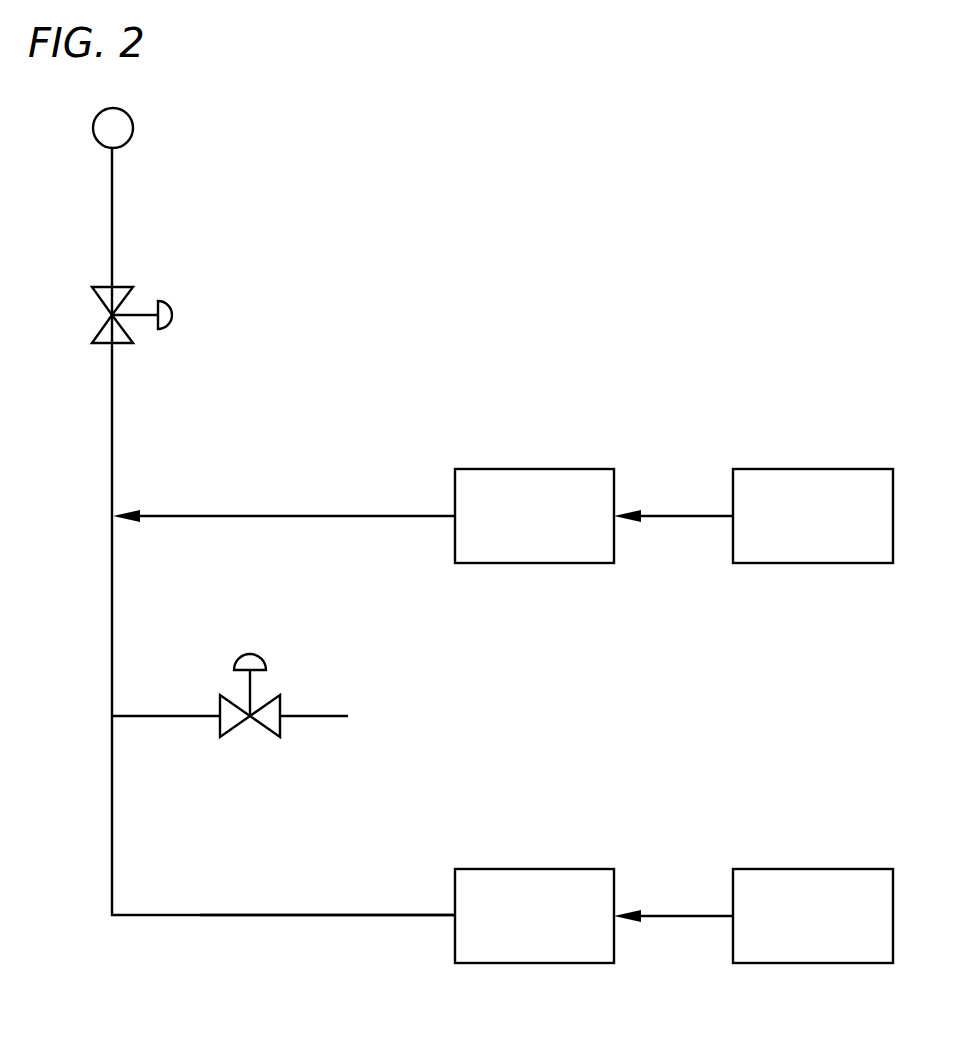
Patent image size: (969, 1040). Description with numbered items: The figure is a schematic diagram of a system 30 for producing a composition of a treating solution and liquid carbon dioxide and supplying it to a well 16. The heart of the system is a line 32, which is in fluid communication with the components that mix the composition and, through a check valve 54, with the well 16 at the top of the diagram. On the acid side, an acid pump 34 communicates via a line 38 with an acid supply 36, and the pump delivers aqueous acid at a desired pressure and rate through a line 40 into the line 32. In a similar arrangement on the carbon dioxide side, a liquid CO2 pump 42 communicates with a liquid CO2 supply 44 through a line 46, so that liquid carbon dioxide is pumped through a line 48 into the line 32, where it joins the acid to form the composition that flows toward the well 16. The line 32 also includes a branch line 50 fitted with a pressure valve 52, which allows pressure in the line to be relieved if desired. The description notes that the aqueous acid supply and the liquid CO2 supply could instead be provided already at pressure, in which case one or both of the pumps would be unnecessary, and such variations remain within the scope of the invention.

The system 30 is at (342, 128).
The well 16 is at (133, 128).
The line 32 is at (113, 457).
The check valve 54 is at (173, 309).
The line 40 is at (283, 516).
The acid pump 34 is at (499, 469).
The line 38 is at (660, 516).
The acid supply 36 is at (803, 469).
The line 50 is at (140, 716).
The pressure valve 52 is at (258, 656).
The line 48 is at (275, 915).
The liquid CO2 pump 42 is at (499, 873).
The line 46 is at (660, 916).
The liquid CO2 supply 44 is at (762, 869).